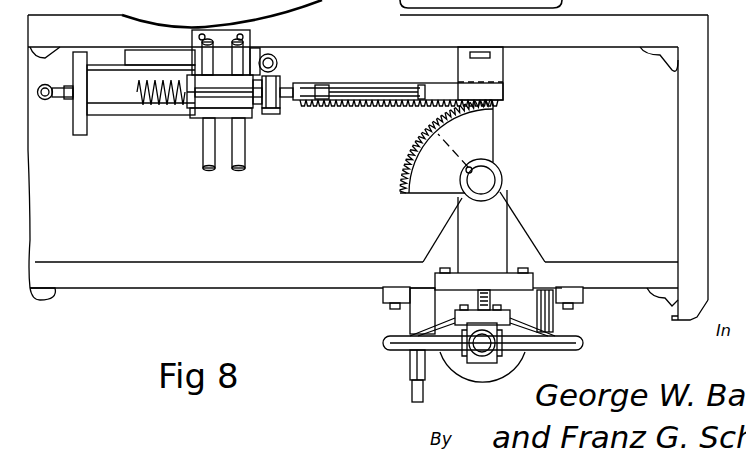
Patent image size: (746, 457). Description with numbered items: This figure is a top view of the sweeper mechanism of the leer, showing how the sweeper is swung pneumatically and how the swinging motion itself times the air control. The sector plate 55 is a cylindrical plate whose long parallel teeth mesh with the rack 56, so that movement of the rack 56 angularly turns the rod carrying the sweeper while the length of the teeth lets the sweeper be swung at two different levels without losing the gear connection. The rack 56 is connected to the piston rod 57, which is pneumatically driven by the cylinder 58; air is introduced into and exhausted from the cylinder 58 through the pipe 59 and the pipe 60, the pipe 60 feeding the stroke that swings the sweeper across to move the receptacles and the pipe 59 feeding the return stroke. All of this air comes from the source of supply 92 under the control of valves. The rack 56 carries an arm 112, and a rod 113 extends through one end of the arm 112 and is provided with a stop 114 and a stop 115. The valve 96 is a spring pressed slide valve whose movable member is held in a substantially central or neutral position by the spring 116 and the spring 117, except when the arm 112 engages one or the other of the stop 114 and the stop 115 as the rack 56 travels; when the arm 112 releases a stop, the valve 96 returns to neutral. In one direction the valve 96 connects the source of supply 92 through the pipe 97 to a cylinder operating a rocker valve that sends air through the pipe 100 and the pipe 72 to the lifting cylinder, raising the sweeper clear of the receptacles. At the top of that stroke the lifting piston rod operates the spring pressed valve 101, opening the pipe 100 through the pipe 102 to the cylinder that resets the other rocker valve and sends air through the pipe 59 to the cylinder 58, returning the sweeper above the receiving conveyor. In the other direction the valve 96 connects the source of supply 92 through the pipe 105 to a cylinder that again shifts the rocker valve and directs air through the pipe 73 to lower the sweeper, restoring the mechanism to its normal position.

The sector plate 55 is at (483, 143).
The rack 56 is at (358, 107).
The piston rod 57 is at (287, 82).
The cylinder 58 is at (120, 110).
The pipe 59 is at (48, 100).
The pipe 60 is at (278, 58).
The pipe 72 is at (415, 402).
The pipe 73 is at (410, 383).
The source of supply 92 is at (240, 168).
The valve 96 is at (206, 92).
The pipe 97 is at (205, 52).
The pipe 100 is at (397, 351).
The spring pressed valve 101 is at (470, 360).
The pipe 102 is at (567, 341).
The pipe 105 is at (252, 50).
The arm 112 is at (334, 89).
The rod 113 is at (385, 90).
The stop 114 is at (322, 86).
The stop 115 is at (423, 87).
The spring 116 is at (162, 104).
The spring 117 is at (277, 108).